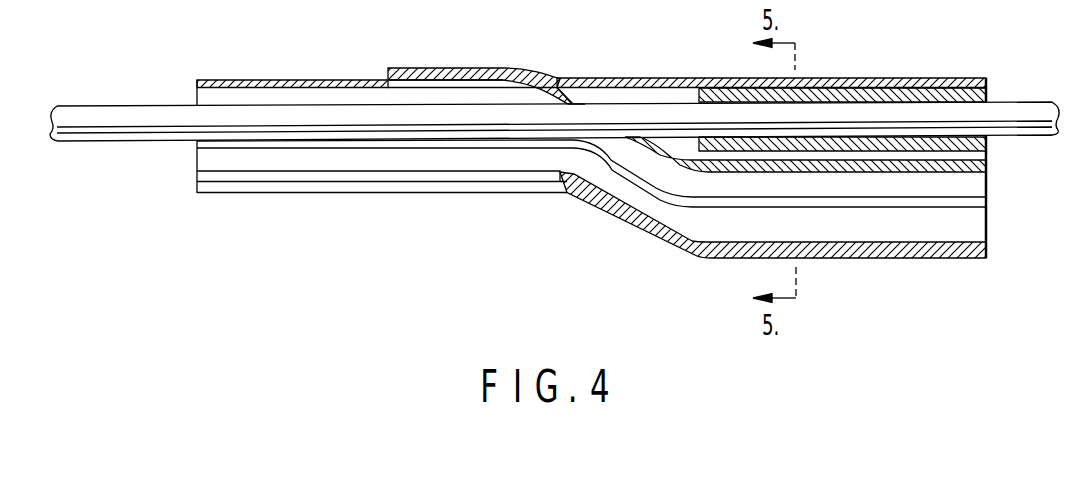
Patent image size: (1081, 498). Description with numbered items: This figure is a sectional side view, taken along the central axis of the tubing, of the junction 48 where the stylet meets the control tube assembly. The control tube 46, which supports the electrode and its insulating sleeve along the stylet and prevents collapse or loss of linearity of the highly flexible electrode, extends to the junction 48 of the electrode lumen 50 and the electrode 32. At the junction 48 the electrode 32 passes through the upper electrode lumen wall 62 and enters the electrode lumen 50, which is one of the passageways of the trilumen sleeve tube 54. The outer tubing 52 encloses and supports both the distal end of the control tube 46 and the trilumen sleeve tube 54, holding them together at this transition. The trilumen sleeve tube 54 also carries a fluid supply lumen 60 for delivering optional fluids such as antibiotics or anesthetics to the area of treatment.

The electrode 32 is at (125, 108).
The trilumen sleeve tube 54 is at (317, 80).
The electrode lumen 50 is at (493, 98).
The upper electrode lumen wall 62 is at (588, 88).
The outer tubing 52 is at (652, 80).
The control tube 46 is at (990, 150).
The junction 48 is at (610, 148).
The fluid supply lumen 60 is at (348, 162).